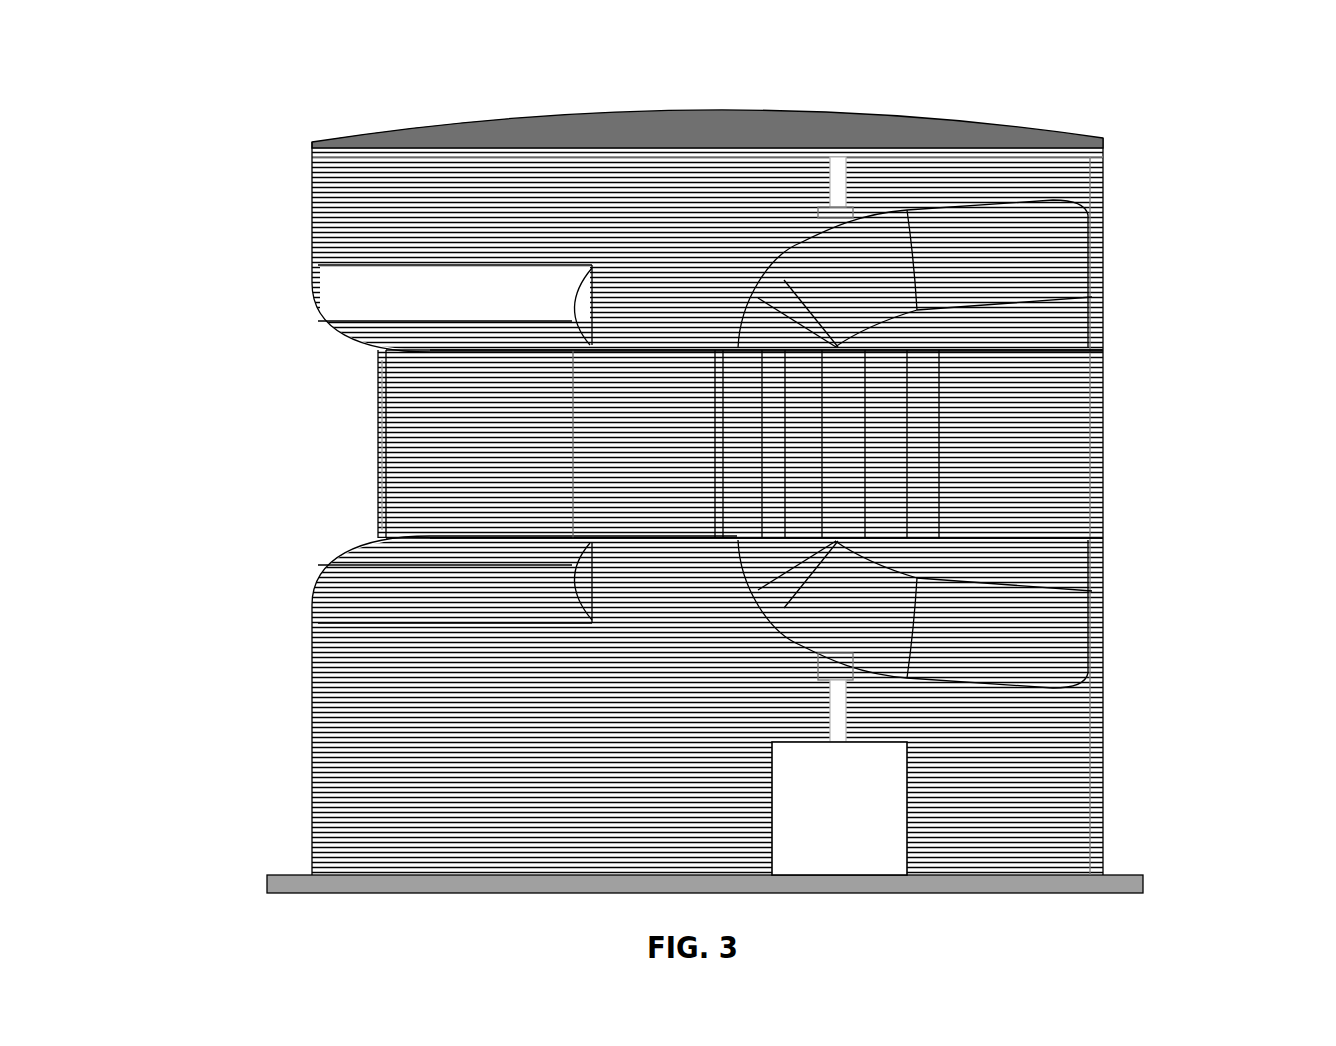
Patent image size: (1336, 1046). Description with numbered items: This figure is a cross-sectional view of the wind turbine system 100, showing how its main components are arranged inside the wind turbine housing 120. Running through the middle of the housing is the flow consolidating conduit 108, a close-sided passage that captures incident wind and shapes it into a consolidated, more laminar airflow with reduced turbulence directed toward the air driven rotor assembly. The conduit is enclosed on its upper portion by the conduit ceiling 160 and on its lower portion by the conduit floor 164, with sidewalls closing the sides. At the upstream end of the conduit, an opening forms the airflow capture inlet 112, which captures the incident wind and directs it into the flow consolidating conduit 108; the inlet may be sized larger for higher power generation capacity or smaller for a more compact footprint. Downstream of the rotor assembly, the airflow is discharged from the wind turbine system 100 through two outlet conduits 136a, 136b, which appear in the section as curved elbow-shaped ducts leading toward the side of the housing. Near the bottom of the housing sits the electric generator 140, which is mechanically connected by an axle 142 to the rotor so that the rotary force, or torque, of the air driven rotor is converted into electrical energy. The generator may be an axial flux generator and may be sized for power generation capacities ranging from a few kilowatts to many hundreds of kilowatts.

The wind turbine system 100 is at (383, 78).
The wind turbine housing 120 is at (315, 221).
The flow consolidating conduit 108 is at (415, 366).
The airflow capture inlet 112 is at (352, 433).
The conduit ceiling 160 is at (627, 352).
The conduit floor 164 is at (695, 538).
The outlet conduit 136a is at (1040, 258).
The outlet conduit 136b is at (1033, 637).
The axle 142 is at (847, 713).
The electric generator 140 is at (907, 807).